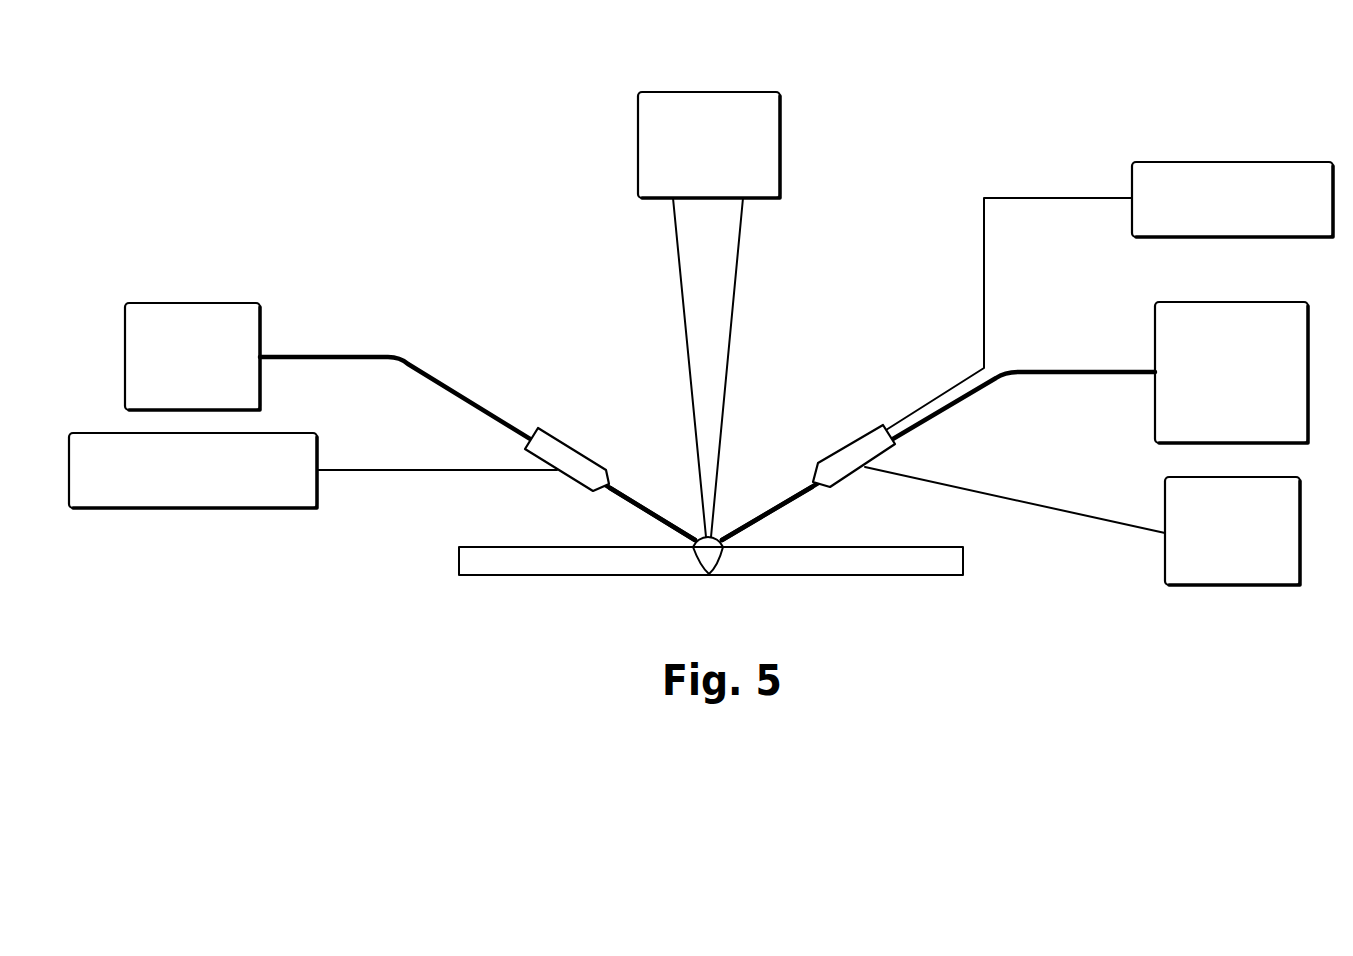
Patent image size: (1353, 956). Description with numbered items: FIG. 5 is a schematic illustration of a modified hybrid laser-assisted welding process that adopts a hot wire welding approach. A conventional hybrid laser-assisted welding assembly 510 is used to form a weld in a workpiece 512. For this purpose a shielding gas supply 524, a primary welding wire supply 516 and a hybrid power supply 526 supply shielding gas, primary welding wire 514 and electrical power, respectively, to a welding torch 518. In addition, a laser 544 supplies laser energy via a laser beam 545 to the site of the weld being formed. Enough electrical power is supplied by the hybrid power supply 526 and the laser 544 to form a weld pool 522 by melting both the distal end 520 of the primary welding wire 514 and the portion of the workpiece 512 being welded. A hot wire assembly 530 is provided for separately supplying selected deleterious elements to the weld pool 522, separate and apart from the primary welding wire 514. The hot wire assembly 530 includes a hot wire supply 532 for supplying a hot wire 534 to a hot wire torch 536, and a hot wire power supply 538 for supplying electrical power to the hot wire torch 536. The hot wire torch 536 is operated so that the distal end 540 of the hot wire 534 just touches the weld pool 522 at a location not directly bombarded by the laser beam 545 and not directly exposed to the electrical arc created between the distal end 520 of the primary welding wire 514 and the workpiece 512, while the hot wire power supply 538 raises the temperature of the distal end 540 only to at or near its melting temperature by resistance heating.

The hybrid laser-assisted welding assembly 510 is at (1030, 119).
The workpiece 512 is at (847, 560).
The primary welding wire 514 is at (968, 398).
The primary welding wire supply 516 is at (1153, 342).
The welding torch 518 is at (850, 443).
The distal end of primary welding wire 520 is at (785, 502).
The weld pool 522 is at (720, 555).
The shielding gas supply 524 is at (1235, 162).
The hybrid power supply 526 is at (1230, 585).
The hot wire assembly 530 is at (353, 230).
The hot wire supply 532 is at (188, 302).
The hot wire 534 is at (435, 377).
The hot wire torch 536 is at (570, 443).
The hot wire power supply 538 is at (192, 508).
The distal end of hot wire 540 is at (637, 507).
The laser 544 is at (780, 143).
The laser beam 545 is at (732, 328).